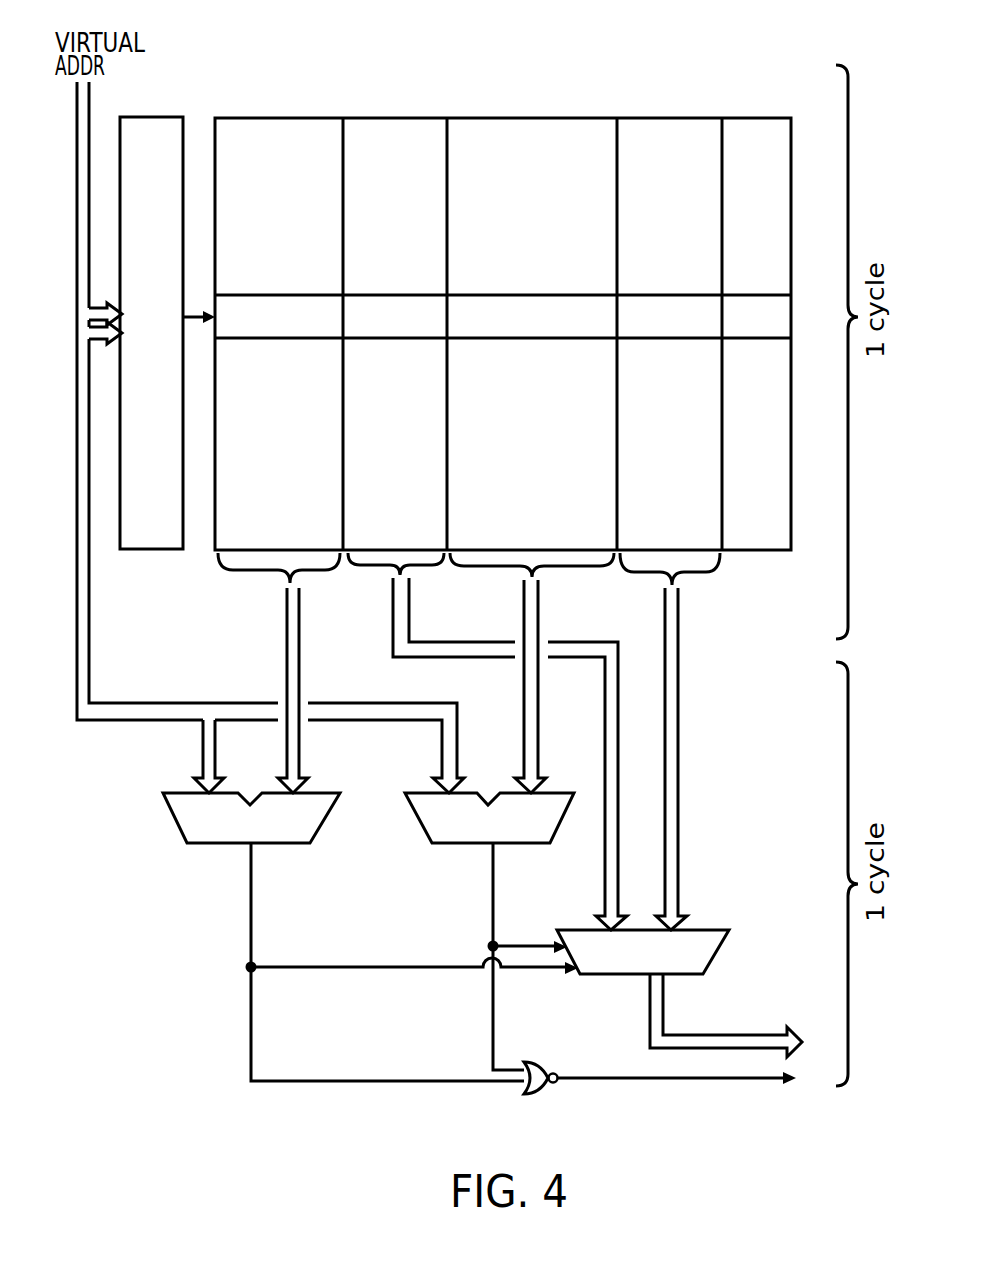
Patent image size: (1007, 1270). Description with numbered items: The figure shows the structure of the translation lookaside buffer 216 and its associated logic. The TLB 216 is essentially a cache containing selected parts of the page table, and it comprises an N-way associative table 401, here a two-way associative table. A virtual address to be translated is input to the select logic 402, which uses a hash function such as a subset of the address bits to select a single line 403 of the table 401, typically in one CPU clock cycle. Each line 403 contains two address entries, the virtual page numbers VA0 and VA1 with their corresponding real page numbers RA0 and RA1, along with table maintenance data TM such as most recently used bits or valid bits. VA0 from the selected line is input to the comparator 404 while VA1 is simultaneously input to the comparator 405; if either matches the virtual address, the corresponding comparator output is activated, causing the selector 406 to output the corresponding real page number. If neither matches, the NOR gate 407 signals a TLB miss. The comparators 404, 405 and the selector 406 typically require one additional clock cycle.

The translation lookaside buffer 216 is at (509, 84).
The N-way associative table 401 is at (746, 118).
The select logic 402 is at (176, 117).
The line 403 is at (802, 313).
The comparator 404 is at (174, 820).
The comparator 405 is at (416, 820).
The selector 406 is at (716, 954).
The NOR gate 407 is at (538, 1091).